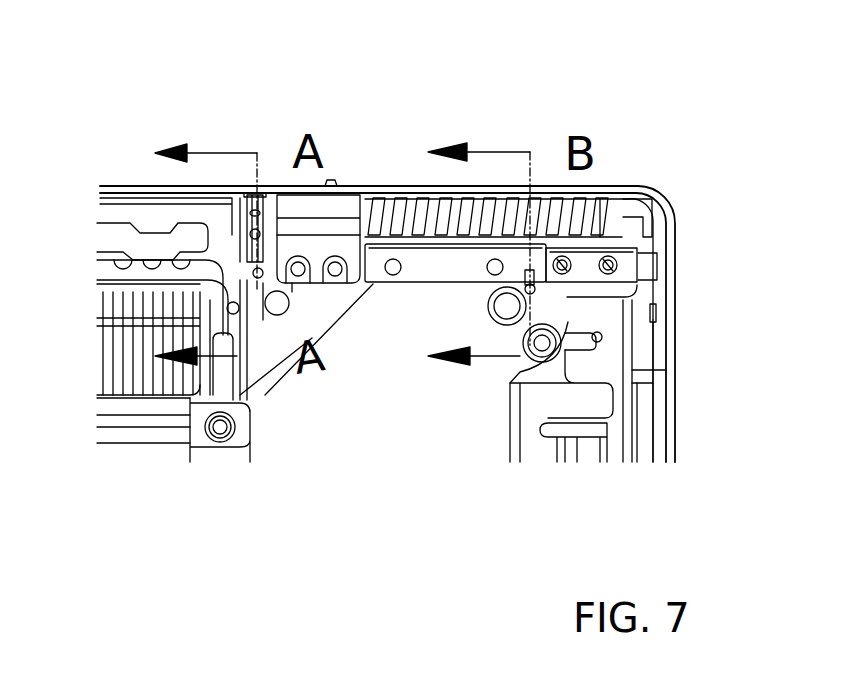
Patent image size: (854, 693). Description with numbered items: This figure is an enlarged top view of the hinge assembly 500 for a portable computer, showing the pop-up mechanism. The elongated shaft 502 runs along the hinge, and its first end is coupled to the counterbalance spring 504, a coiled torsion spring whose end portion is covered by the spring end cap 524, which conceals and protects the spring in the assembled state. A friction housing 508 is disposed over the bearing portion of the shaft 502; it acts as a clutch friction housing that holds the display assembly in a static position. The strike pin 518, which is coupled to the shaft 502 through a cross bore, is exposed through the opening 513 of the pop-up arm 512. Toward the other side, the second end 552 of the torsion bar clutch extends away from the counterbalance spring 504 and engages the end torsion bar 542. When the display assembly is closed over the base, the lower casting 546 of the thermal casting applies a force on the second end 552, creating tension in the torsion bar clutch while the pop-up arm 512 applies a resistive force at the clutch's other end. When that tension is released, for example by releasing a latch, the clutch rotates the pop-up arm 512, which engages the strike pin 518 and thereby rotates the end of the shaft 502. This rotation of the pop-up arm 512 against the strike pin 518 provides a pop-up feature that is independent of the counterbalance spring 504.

The hinge assembly 500 is at (237, 84).
The elongated shaft 502 is at (125, 217).
The counterbalance spring 504 is at (594, 203).
The friction housing 508 is at (340, 207).
The pop-up arm 512 is at (258, 262).
The opening 513 is at (258, 208).
The strike pin 518 is at (252, 196).
The spring end cap 524 is at (641, 208).
The end torsion bar 542 is at (425, 285).
The lower casting 546 is at (637, 284).
The second end of torsion bar clutch 552 is at (533, 281).